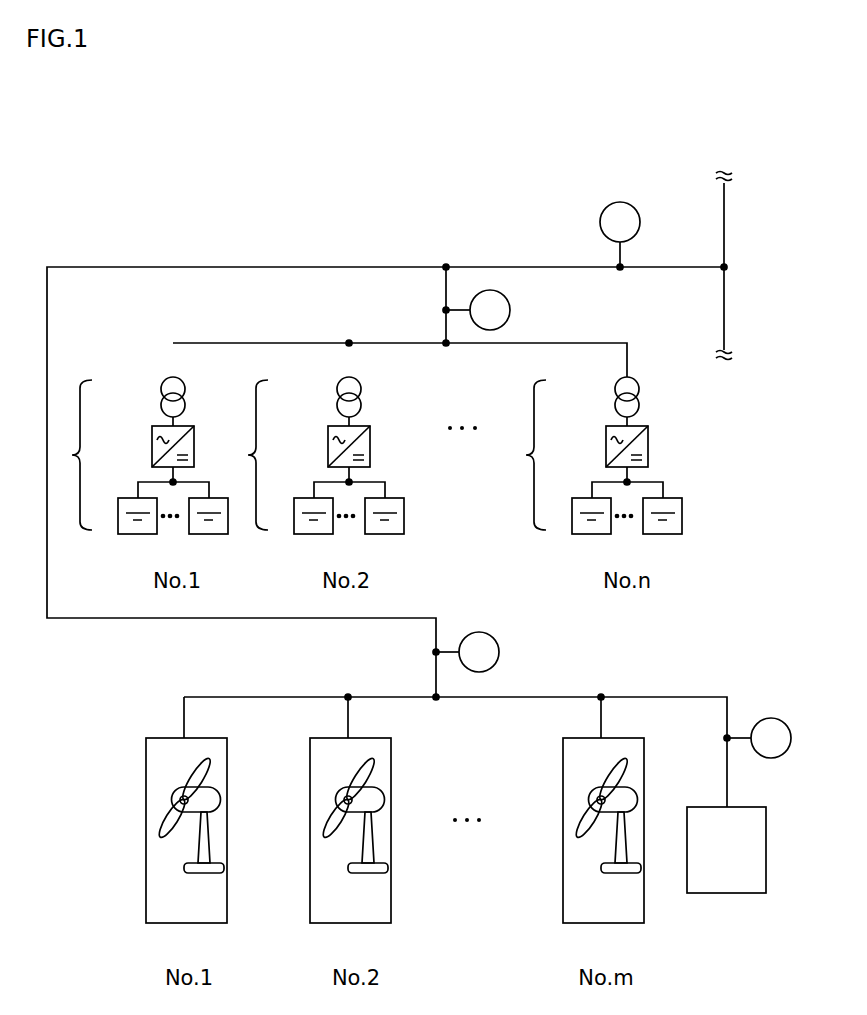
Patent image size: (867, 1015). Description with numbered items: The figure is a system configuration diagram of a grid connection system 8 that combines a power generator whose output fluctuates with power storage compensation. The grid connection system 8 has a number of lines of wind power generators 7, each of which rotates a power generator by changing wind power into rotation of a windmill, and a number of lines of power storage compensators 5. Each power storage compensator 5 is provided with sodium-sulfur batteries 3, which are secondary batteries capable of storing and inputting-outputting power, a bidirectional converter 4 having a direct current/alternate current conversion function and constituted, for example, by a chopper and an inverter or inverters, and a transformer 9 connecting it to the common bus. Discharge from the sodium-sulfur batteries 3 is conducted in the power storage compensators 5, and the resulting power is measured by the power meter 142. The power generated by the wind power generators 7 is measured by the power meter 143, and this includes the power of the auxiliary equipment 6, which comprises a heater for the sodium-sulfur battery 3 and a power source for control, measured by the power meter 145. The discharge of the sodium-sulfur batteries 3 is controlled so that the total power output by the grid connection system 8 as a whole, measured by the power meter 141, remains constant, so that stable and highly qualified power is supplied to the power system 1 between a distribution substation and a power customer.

The power system 1 is at (725, 241).
The sodium-sulfur battery 3 is at (118, 520).
The bidirectional converter 4 is at (152, 449).
The power storage compensator 5 is at (299, 455).
The auxiliary equipment 6 is at (720, 860).
The wind power generator 7 is at (227, 918).
The grid connection system 8 is at (340, 231).
The transformer 9 is at (161, 392).
The power meter 141 is at (640, 222).
The power meter 142 is at (510, 310).
The power meter 143 is at (499, 652).
The power meter 145 is at (767, 718).